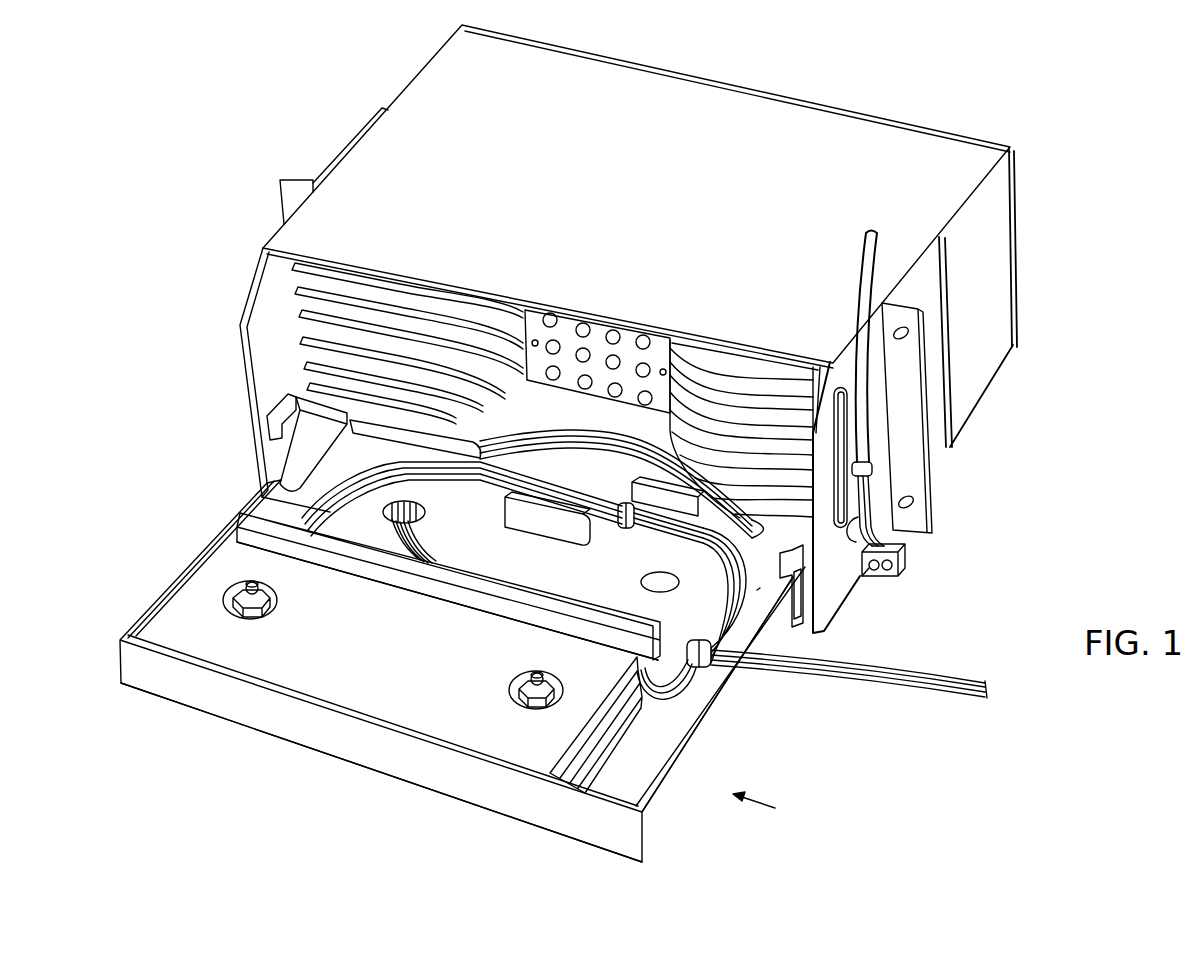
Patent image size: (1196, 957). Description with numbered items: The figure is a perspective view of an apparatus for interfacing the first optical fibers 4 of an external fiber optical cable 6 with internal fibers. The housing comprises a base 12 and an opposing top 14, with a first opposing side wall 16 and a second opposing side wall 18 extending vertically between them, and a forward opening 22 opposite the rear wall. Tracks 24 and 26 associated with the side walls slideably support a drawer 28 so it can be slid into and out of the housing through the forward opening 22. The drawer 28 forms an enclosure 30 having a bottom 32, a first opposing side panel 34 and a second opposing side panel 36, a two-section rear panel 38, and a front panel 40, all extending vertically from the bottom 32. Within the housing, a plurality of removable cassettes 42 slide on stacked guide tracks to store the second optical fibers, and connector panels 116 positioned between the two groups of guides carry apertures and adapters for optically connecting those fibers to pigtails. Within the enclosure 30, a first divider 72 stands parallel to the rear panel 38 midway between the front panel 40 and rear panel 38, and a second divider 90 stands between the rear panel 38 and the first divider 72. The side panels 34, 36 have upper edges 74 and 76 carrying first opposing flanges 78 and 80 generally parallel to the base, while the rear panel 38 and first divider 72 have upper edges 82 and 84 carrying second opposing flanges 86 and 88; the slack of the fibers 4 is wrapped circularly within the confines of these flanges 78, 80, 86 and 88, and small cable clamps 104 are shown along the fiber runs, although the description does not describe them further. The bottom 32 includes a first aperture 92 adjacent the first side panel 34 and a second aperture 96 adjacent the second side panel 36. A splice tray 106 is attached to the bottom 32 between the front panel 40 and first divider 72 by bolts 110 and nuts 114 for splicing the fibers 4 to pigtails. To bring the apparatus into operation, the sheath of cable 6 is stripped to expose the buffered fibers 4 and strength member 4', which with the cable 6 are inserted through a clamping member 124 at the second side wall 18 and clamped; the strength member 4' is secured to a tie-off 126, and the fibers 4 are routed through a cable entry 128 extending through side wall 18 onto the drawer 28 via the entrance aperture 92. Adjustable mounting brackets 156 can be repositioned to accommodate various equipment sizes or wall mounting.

The first optical fibers 4 is at (849, 605).
The strength member 4' is at (914, 550).
The first fiber optical cable 6 is at (858, 272).
The base 12 is at (487, 426).
The top 14 is at (547, 162).
The first opposing side wall 16 is at (414, 78).
The second opposing side wall 18 is at (997, 293).
The forward opening 22 is at (552, 402).
The track 24 is at (808, 577).
The track 26 is at (229, 372).
The drawer 28 is at (773, 809).
The enclosure 30 is at (637, 778).
The bottom 32 is at (639, 750).
The first opposing side panel 34 is at (266, 497).
The second opposing side panel 36 is at (708, 730).
The rear panel 38 is at (483, 463).
The front panel 40 is at (208, 707).
The removable cassettes 42 is at (397, 305).
The first divider 72 is at (695, 683).
The upper edge 74 is at (240, 525).
The upper edge 76 is at (677, 748).
The first opposing flange 78 is at (289, 474).
The first opposing flange 80 is at (757, 590).
The upper edge 82 is at (700, 510).
The upper edge 84 is at (567, 622).
The second opposing flange 86 is at (428, 443).
The second opposing flange 88 is at (432, 583).
The second divider 90 is at (520, 519).
The first aperture 92 is at (392, 512).
The second aperture 96 is at (641, 584).
The cable clamp 104 is at (630, 523).
The splice tray 106 is at (610, 747).
The bolts 110 is at (243, 585).
The nuts 114 is at (262, 613).
The connector panels 116 is at (575, 318).
The clamping member 124 is at (873, 470).
The tie-off 126 is at (900, 565).
The cable entry 128 is at (862, 576).
The adjustable mounting brackets 156 is at (296, 190).